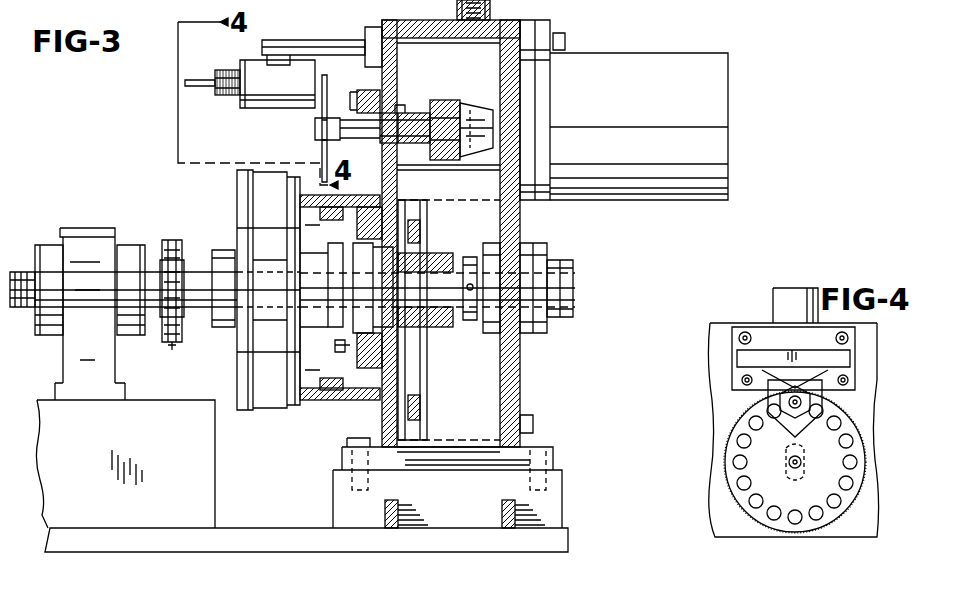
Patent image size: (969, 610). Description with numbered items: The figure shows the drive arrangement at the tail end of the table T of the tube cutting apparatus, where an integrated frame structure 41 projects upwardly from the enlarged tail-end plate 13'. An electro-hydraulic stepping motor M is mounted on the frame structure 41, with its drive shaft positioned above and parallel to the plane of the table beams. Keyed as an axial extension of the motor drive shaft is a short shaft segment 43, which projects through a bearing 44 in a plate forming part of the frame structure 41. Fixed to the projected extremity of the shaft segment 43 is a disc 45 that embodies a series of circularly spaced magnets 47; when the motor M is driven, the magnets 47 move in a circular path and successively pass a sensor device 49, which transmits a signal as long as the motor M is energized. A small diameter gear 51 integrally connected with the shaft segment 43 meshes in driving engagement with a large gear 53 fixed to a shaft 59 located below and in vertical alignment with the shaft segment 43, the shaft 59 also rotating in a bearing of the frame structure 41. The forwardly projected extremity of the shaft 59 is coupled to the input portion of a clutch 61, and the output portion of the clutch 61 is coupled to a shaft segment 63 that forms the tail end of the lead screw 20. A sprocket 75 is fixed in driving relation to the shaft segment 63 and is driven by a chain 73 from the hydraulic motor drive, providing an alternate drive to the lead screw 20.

In FIG. 3, the table T is at (272, 556).
In FIG. 3, the plate 13' is at (445, 512).
In FIG. 3, the lead screw 20 is at (30, 272).
In FIG. 3, the shaft segment 63 is at (200, 280).
In FIG. 3, the sprocket 75 is at (165, 262).
In FIG. 3, the chain 73 is at (180, 336).
In FIG. 3, the clutch 61 is at (268, 410).
In FIG. 3, the large gear 53 is at (412, 234).
In FIG. 3, the shaft 59 is at (435, 318).
In FIG. 3, the frame structure 41 is at (522, 373).
In FIG. 4, the frame structure 41 is at (710, 378).
In FIG. 3, the bearing 44 is at (405, 105).
In FIG. 3, the small diameter gear 51 is at (425, 110).
In FIG. 3, the shaft segment 43 is at (470, 103).
In FIG. 4, the shaft segment 43 is at (799, 473).
In FIG. 3, the disc 45 is at (322, 148).
In FIG. 4, the disc 45 is at (735, 494).
In FIG. 3, the sensor device 49 is at (248, 108).
In FIG. 4, the sensor device 49 is at (770, 400).
In FIG. 4, the magnets 47 is at (733, 462).
In FIG. 3, the electro-hydraulic stepping motor M is at (618, 103).